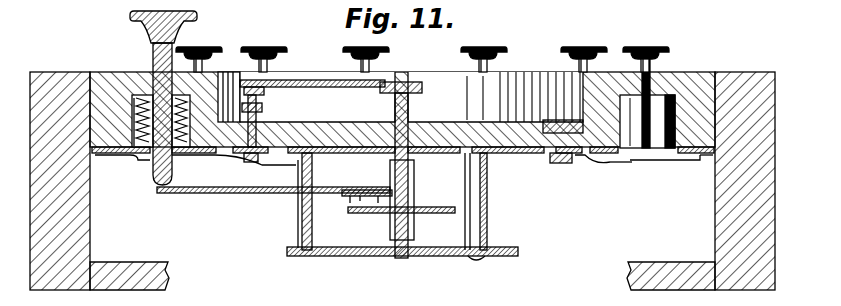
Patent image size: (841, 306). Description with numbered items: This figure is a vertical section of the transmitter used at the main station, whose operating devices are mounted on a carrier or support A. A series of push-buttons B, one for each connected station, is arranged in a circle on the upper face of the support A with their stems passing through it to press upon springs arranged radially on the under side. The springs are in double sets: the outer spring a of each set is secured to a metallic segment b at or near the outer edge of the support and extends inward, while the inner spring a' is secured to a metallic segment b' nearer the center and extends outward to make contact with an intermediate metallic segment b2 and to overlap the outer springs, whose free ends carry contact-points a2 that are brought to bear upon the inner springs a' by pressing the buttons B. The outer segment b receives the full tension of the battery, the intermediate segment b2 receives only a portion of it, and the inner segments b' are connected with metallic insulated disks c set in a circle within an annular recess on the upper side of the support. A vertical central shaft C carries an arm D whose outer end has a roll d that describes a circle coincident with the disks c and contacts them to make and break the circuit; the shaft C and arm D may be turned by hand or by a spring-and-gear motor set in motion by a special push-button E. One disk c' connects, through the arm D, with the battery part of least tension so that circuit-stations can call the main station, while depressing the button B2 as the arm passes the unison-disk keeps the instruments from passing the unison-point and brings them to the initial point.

The carrier or support A is at (402, 171).
The special push-button E is at (157, 98).
The push-buttons B is at (455, 49).
The button B2 is at (199, 50).
The arm D is at (325, 101).
The roll d is at (264, 95).
The metallic insulated disk c' is at (260, 121).
The vertical central shaft C is at (404, 170).
The metallic insulated disks c is at (563, 119).
The spring a is at (404, 166).
The spring a' is at (436, 165).
The contact-points a2 is at (622, 168).
The metallic segment b is at (553, 161).
The metallic segments b' is at (254, 163).
The intermediate metallic segment b2 is at (592, 169).